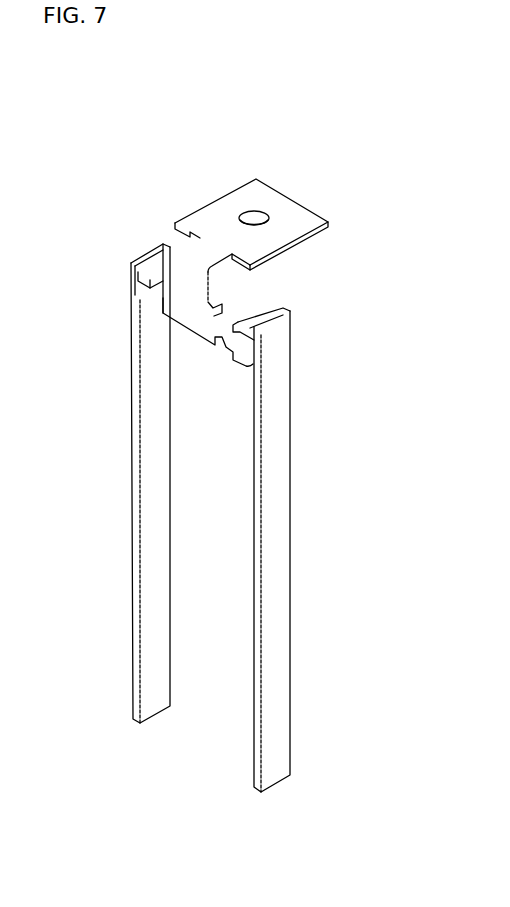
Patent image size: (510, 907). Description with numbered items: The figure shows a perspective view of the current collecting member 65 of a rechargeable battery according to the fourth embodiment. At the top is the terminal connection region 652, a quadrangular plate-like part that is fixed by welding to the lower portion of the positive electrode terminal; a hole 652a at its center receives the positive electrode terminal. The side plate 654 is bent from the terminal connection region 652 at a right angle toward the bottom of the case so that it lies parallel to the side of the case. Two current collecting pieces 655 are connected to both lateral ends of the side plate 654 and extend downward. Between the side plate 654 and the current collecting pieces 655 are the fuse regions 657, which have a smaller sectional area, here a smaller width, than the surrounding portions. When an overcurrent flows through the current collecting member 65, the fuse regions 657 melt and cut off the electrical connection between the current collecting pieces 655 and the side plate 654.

The current collecting member 65 is at (197, 197).
The terminal connection region 652 is at (285, 213).
The hole 652a is at (247, 207).
The side plate 654 is at (182, 300).
The current collecting pieces 655 is at (147, 488).
The fuse regions 657 is at (152, 297).